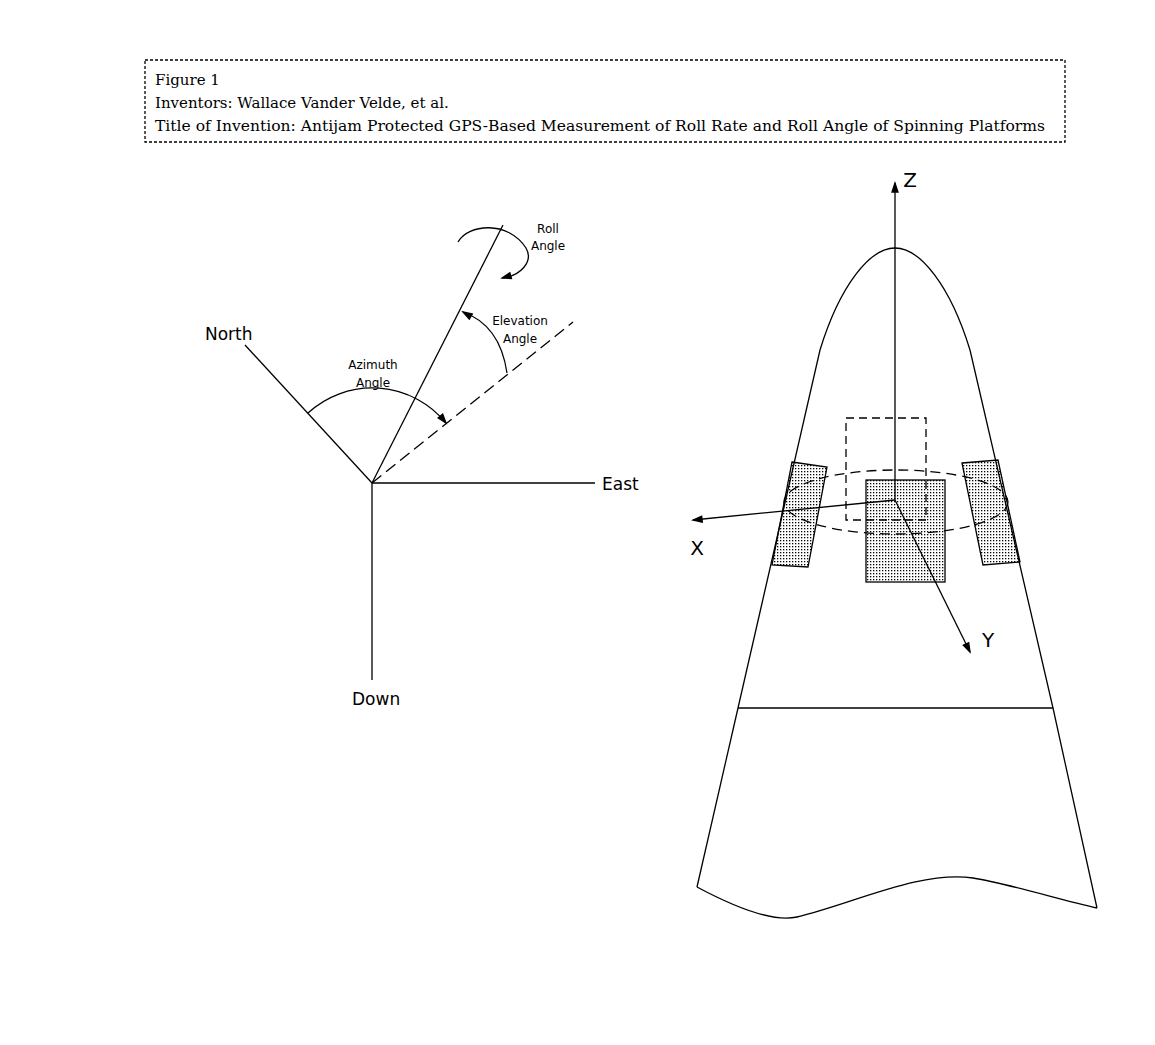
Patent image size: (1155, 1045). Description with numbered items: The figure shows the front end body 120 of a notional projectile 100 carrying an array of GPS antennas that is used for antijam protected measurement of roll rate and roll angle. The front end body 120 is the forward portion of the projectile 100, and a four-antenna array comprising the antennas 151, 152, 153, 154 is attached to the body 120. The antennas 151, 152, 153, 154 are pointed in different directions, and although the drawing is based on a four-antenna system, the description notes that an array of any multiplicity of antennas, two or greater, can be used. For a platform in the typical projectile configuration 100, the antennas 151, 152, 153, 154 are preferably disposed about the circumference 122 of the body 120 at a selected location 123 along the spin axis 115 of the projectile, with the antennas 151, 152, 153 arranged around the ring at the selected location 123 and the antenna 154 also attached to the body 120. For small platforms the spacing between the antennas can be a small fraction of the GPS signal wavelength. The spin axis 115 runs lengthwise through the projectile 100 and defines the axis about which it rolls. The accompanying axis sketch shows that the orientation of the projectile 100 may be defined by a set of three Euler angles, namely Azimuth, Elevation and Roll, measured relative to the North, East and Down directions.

The projectile 100 is at (1123, 682).
The spin axis 115 is at (872, 341).
The front end body 120 is at (895, 690).
The circumference 122 is at (803, 400).
The selected location 123 is at (848, 533).
The antenna 151 is at (790, 478).
The antenna 152 is at (907, 583).
The antenna 153 is at (1002, 477).
The antenna 154 is at (870, 417).